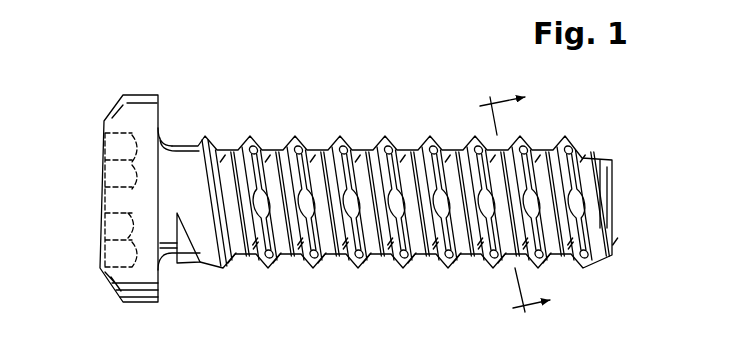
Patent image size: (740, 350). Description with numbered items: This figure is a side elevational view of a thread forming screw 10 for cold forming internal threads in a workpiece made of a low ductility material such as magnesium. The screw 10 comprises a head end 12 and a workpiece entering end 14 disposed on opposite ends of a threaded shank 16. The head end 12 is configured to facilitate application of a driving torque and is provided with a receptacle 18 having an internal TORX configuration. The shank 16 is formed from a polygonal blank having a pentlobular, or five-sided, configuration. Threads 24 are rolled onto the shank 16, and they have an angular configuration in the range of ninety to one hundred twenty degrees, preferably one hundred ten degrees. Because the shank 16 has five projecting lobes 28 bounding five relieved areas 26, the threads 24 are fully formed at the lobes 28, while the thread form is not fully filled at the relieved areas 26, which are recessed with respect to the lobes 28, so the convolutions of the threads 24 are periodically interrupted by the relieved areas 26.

The thread forming screw 10 is at (207, 99).
The head end 12 is at (109, 291).
The workpiece entering end 14 is at (617, 209).
The threaded shank 16 is at (377, 266).
The receptacle 18 is at (105, 178).
The threads 24 is at (423, 132).
The relieved areas 26 is at (323, 138).
The lobes 28 is at (580, 153).